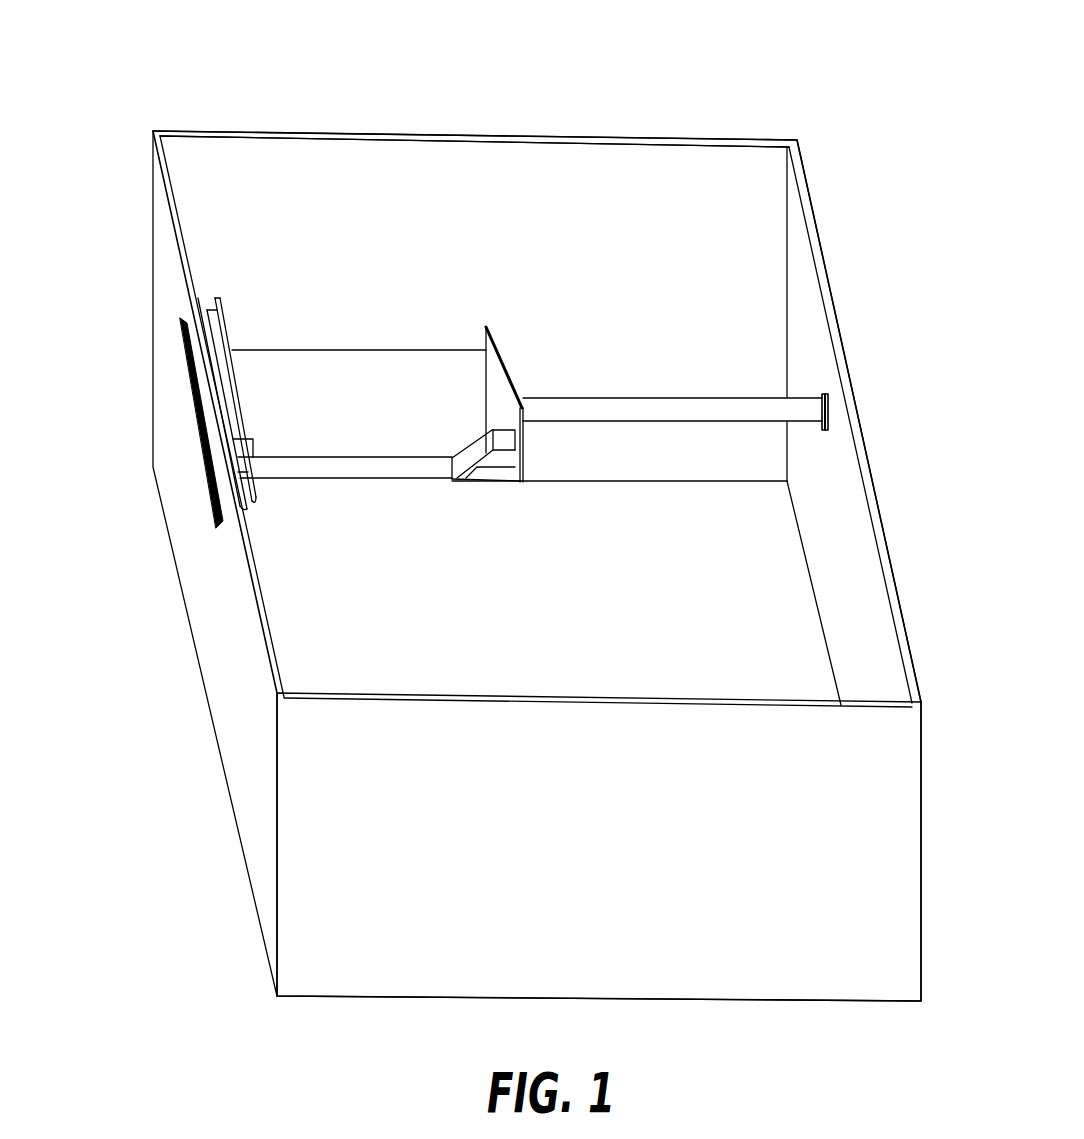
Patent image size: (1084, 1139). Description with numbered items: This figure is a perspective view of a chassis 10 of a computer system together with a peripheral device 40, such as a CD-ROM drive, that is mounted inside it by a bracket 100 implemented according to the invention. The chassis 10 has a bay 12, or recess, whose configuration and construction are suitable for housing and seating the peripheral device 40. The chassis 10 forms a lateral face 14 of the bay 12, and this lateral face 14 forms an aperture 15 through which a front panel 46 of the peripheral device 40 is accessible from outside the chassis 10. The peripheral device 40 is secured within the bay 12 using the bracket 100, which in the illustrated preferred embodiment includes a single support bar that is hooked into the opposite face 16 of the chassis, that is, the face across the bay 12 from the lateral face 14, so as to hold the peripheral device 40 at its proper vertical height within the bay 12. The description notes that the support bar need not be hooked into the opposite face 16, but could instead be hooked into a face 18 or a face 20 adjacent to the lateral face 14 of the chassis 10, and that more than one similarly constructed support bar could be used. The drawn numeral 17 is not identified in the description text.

The chassis 10 is at (700, 131).
The bay 12 is at (338, 184).
The lateral face 14 is at (165, 278).
The aperture 15 is at (183, 414).
The opposite face 16 is at (820, 316).
The end clip 17 is at (825, 432).
The face adjacent to the lateral face 18 is at (548, 156).
The face adjacent to the lateral face 20 is at (302, 893).
The peripheral device 40 is at (438, 445).
The front panel 46 is at (182, 378).
The bracket 100 is at (640, 389).